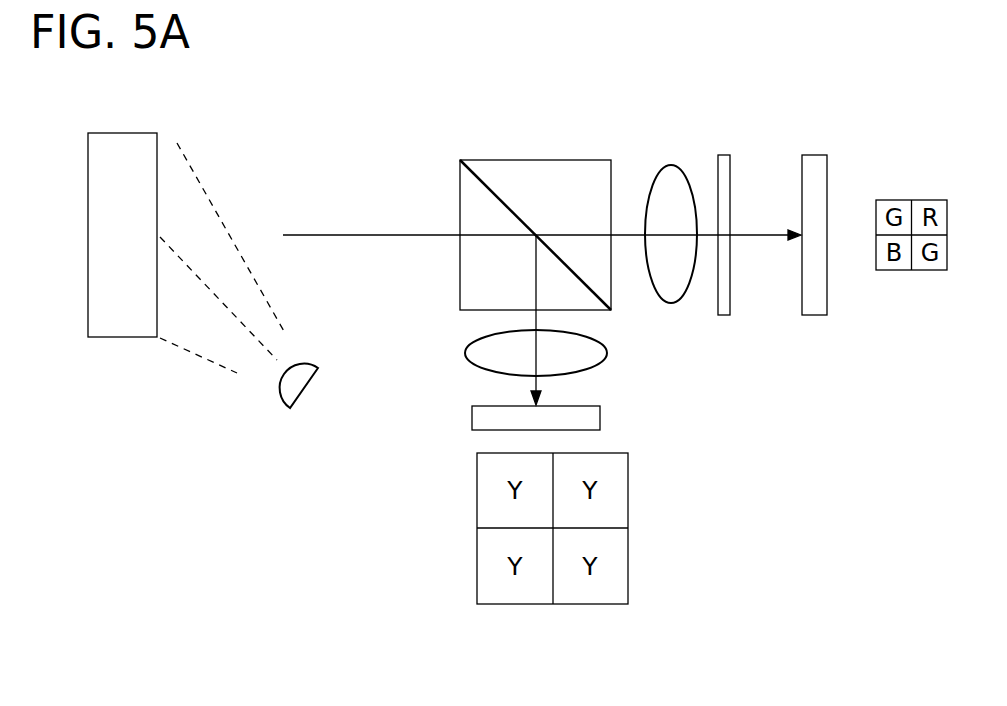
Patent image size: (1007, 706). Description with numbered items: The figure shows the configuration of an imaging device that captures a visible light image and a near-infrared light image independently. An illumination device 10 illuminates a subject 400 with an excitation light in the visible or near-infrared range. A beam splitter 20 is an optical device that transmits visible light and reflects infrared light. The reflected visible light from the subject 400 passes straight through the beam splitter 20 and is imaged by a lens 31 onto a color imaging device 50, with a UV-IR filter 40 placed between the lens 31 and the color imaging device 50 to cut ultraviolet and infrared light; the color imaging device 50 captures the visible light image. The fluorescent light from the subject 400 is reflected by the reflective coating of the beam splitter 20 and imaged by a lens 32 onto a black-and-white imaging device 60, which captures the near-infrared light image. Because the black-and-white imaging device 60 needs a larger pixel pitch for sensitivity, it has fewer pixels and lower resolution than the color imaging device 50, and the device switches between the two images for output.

The subject 400 is at (122, 131).
The illumination device 10 is at (303, 397).
The beam splitter 20 is at (537, 158).
The lens 31 is at (670, 163).
The lens 32 is at (607, 353).
The UV-IR filter 40 is at (723, 153).
The color imaging device 50 is at (813, 153).
The black-and-white imaging device 60 is at (600, 418).